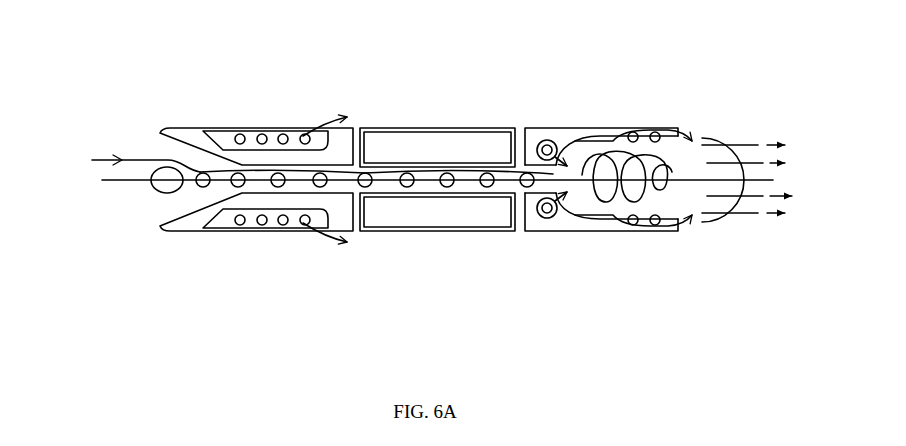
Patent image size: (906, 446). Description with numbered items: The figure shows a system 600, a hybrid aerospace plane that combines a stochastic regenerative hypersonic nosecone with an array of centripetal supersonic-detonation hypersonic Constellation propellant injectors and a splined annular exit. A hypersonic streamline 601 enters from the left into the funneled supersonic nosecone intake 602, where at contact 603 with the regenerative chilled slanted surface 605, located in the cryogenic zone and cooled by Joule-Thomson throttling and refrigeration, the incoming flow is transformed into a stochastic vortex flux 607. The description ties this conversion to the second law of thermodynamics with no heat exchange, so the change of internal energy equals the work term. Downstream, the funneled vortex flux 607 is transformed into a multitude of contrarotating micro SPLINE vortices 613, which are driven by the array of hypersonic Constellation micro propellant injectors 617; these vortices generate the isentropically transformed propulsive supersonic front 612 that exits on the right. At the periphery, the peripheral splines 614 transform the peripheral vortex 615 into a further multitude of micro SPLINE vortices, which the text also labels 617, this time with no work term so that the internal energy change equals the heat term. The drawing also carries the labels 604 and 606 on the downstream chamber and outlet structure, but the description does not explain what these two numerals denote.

The system 600 is at (128, 250).
The hypersonic streamline 601 is at (94, 158).
The funneled supersonic nosecone intake 602 is at (172, 232).
The contact 603 is at (166, 130).
The mixing chamber 604 is at (560, 213).
The regenerative chilled slanted surface 605 is at (290, 140).
The outlet block 606 is at (678, 226).
The stochastic vortex flux 607 is at (524, 170).
The transformed supersonic front 612 is at (772, 198).
The contrarotating micro SPLINE vortices 613 is at (636, 224).
The peripheral splines 614 is at (226, 231).
The peripheral vortex 615 is at (262, 221).
The hypersonic Constellation micro propellant injectors 617 is at (547, 140).